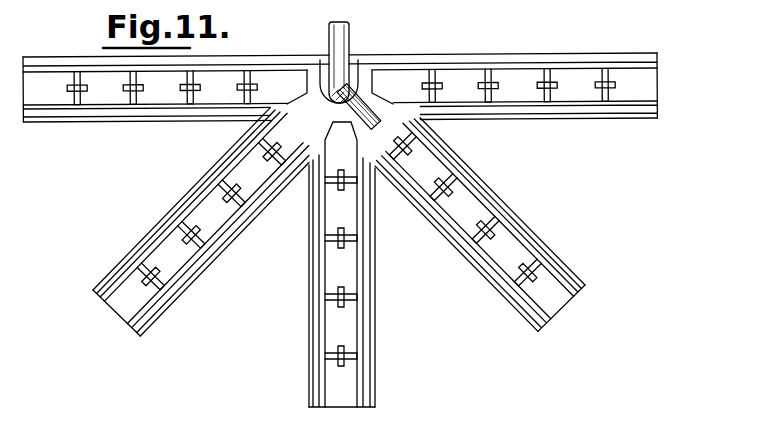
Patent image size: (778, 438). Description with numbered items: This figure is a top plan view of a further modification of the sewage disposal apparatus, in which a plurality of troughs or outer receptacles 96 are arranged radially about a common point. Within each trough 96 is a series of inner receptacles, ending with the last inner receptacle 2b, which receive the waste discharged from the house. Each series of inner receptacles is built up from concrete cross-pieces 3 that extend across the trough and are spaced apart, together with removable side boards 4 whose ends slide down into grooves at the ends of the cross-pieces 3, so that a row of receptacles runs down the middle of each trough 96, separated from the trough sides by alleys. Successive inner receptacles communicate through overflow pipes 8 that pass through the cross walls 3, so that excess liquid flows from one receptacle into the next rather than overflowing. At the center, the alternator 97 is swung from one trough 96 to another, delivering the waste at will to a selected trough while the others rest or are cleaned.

The inner receptacle 2b is at (101, 104).
The cross-piece 3 is at (137, 92).
The side board 4 is at (163, 97).
The pipe 8 is at (123, 96).
The trough 96 is at (600, 52).
The alternator 97 is at (350, 87).